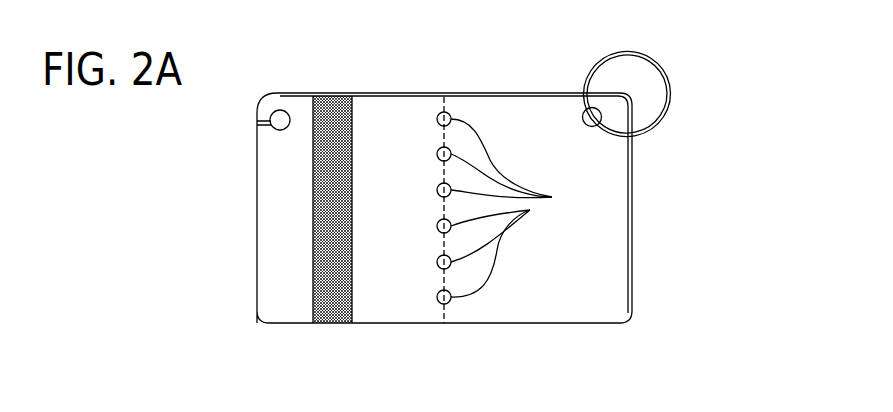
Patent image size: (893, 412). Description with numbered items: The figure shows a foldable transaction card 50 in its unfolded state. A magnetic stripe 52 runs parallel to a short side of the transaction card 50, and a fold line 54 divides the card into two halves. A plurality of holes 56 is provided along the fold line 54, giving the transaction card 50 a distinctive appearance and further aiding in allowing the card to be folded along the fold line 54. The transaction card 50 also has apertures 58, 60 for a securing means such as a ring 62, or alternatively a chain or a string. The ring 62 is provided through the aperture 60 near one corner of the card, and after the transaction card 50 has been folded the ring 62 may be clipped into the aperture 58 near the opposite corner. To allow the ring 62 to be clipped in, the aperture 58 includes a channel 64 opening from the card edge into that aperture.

The transaction card 50 is at (400, 112).
The magnetic stripe 52 is at (313, 275).
The fold line 54 is at (447, 102).
The holes 56 is at (509, 208).
The aperture 58 is at (281, 111).
The aperture 60 is at (588, 108).
The ring 62 is at (671, 73).
The channel 64 is at (262, 123).